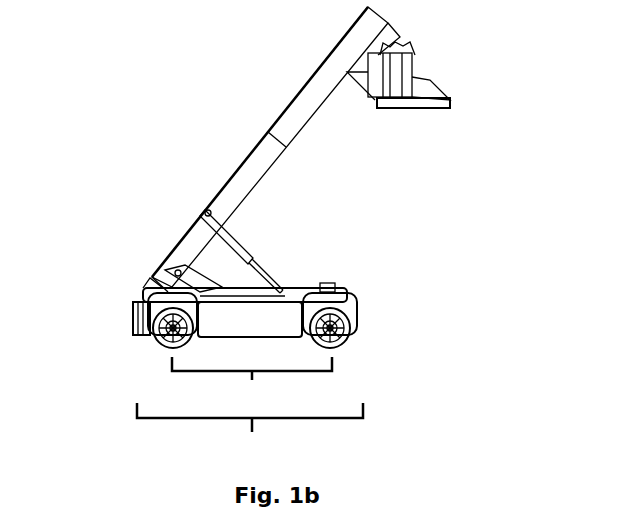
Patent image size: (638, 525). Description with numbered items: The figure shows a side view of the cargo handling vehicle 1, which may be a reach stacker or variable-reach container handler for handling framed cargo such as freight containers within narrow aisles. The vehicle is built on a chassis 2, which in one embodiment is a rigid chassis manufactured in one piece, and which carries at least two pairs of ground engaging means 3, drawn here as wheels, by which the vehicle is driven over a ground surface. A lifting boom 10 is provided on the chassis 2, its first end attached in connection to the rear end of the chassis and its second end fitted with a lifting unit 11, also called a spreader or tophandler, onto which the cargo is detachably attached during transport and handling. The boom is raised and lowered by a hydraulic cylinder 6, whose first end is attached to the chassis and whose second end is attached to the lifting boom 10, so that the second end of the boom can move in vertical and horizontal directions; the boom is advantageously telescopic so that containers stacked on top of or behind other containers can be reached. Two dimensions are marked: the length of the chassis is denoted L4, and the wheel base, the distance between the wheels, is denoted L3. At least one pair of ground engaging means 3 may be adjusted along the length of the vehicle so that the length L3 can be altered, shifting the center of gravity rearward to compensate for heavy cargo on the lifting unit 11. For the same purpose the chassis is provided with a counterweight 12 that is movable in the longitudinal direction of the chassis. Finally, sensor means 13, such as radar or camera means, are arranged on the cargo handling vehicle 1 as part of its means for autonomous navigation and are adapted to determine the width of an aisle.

The cargo handling vehicle 1 is at (205, 167).
The chassis 2 is at (244, 329).
The ground engaging means 3 is at (335, 327).
The hydraulic cylinder 6 is at (255, 243).
The lifting boom 10 is at (282, 110).
The lifting unit 11 is at (407, 105).
The counterweight 12 is at (140, 290).
The sensor means 13 is at (130, 307).
The wheel base length L3 is at (252, 385).
The chassis length L4 is at (250, 431).